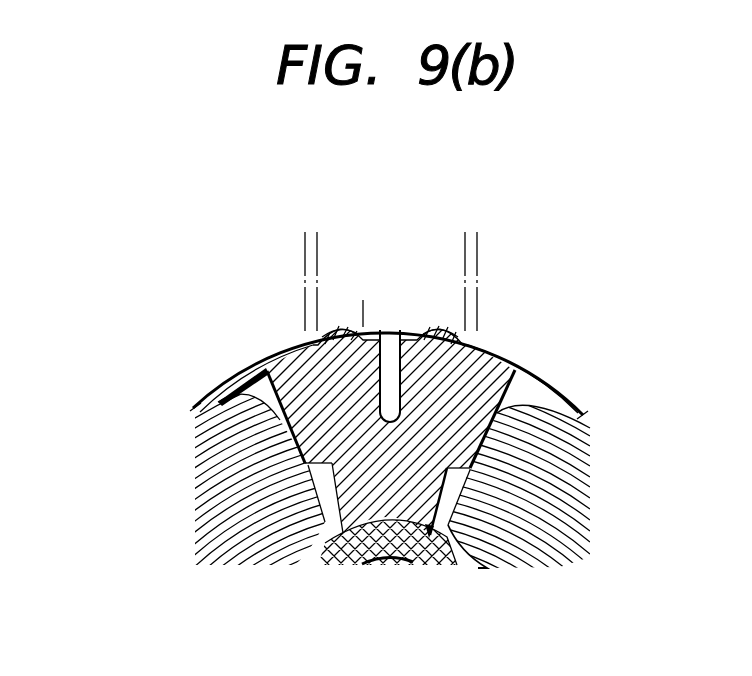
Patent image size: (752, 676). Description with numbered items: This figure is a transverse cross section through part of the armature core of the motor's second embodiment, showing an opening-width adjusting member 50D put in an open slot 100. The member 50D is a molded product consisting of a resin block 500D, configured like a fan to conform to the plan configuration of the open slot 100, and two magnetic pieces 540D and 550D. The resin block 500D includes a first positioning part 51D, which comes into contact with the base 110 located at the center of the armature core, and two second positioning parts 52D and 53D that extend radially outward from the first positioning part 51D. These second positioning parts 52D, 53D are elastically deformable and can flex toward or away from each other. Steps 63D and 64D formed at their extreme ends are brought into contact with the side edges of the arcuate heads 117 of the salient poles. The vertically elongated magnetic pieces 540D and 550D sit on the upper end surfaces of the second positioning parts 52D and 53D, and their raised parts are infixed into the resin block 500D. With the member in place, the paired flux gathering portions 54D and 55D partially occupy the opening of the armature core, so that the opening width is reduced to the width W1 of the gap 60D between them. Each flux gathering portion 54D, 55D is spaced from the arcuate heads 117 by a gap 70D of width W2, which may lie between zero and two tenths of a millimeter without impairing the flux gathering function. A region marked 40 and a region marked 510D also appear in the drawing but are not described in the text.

The reinforcing layer 40 is at (357, 556).
The opening-width adjusting member 50D is at (520, 363).
The first positioning part 51D is at (452, 498).
The second positioning part 52D is at (280, 388).
The second positioning part 53D is at (487, 398).
The flux gathering portion 54D is at (339, 318).
The flux gathering portion 55D is at (447, 318).
The gap 60D is at (418, 328).
The step 63D is at (308, 351).
The step 64D is at (480, 354).
The gap 70D is at (338, 238).
The open slot 100 is at (330, 527).
The base 110 is at (388, 565).
The arcuate head 117 is at (197, 407).
The resin block 500D is at (480, 443).
The left adjacent block 510D is at (240, 461).
The magnetic piece 540D is at (352, 318).
The magnetic piece 550D is at (433, 318).
The width W1 is at (388, 309).